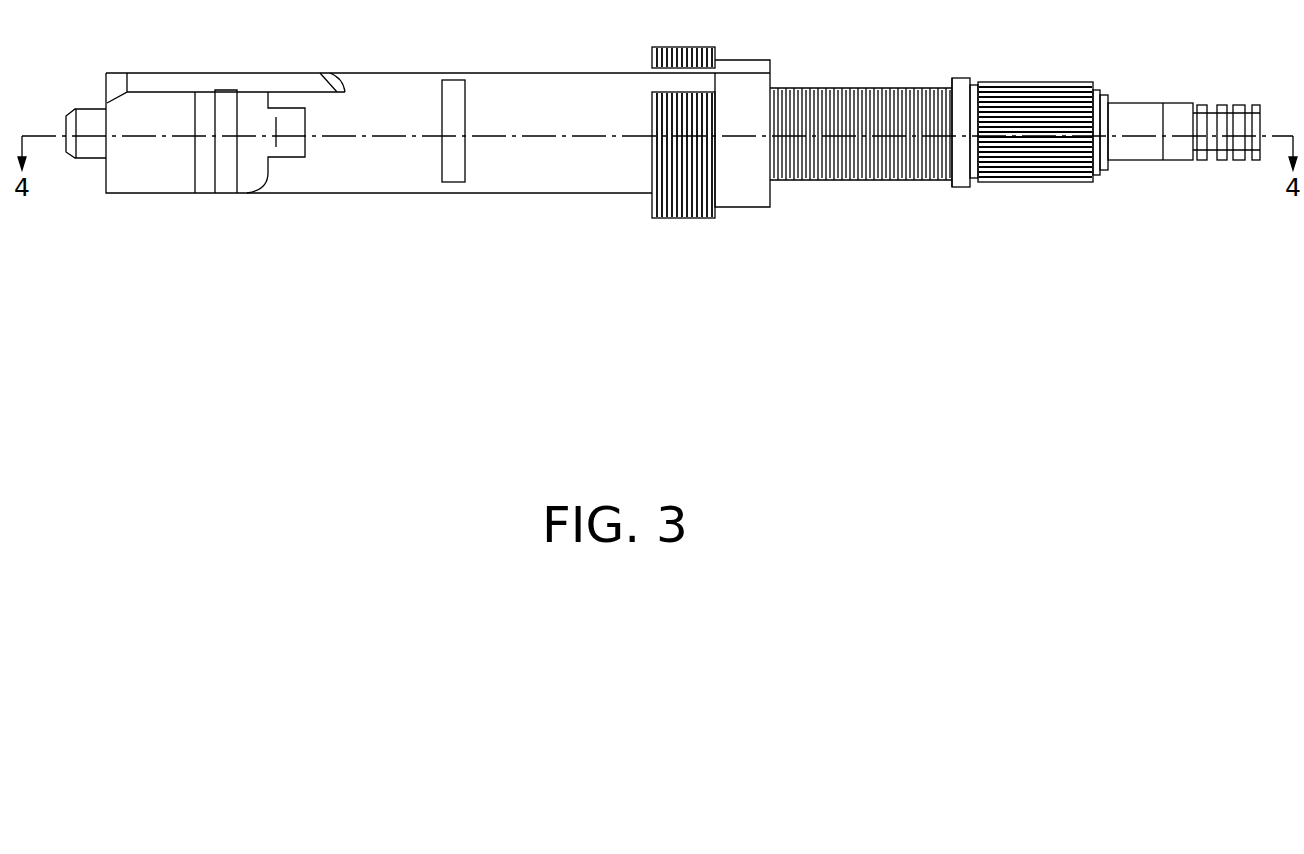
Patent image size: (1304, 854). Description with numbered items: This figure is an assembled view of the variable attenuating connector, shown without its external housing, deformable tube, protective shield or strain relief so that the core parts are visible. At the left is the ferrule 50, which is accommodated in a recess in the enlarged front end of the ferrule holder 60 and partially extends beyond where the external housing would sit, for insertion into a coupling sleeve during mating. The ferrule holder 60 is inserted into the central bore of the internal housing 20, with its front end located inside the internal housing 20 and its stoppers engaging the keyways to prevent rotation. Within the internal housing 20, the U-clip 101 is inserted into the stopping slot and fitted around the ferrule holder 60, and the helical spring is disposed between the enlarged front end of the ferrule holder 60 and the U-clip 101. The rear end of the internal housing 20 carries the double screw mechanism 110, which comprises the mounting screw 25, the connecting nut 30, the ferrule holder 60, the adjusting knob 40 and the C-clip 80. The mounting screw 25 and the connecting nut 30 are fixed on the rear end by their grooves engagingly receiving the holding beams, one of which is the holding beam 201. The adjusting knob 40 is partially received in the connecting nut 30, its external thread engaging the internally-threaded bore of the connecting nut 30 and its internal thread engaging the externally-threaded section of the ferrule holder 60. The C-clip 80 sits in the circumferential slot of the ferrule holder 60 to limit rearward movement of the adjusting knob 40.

The internal housing 20 is at (578, 112).
The holding beam 201 is at (760, 78).
The ferrule 50 is at (94, 148).
The U-clip 101 is at (453, 167).
The mounting screw 25 is at (672, 220).
The connecting nut 30 is at (752, 185).
The adjusting knob 40 is at (1035, 167).
The C-clip 80 is at (1100, 165).
The ferrule holder 60 is at (1146, 147).
The double screw mechanism 110 is at (1156, 280).